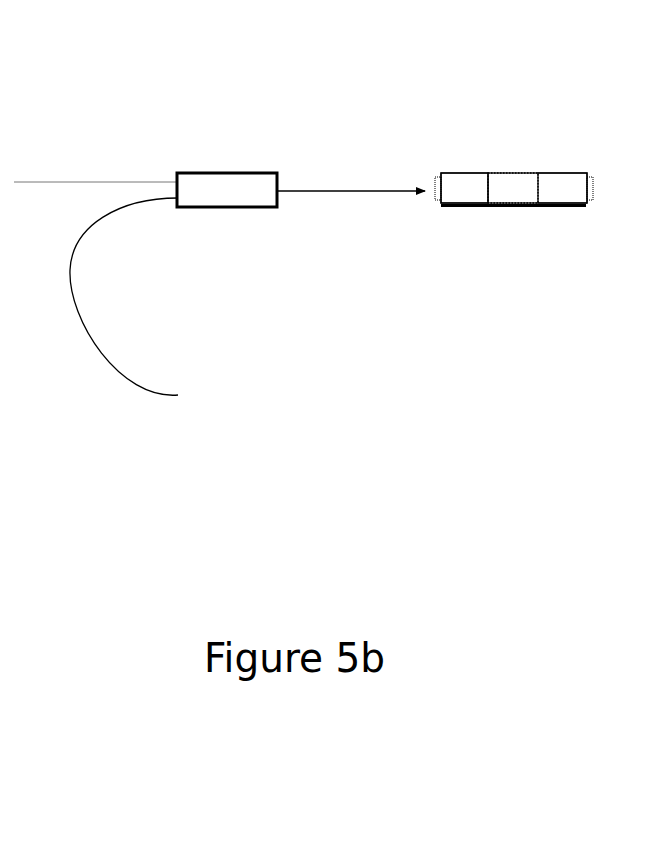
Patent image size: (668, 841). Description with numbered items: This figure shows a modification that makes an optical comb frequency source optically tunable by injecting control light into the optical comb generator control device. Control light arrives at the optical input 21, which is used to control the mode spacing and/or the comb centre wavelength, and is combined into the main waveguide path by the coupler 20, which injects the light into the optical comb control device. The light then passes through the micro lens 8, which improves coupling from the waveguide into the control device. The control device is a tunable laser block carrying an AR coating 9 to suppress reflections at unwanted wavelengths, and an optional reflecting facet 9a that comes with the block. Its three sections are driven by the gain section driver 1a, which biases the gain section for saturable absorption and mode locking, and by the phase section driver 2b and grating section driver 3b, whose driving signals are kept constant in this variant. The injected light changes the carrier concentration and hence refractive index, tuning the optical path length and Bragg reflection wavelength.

The coupler 20 is at (227, 168).
The optical input 21 is at (155, 306).
The micro lens 8 is at (351, 211).
The AR coating 9 is at (527, 184).
The reflecting facet 9a is at (428, 175).
The gain section driver 1a is at (493, 110).
The phase section driver 2b is at (545, 119).
The grating section driver 3b is at (593, 127).